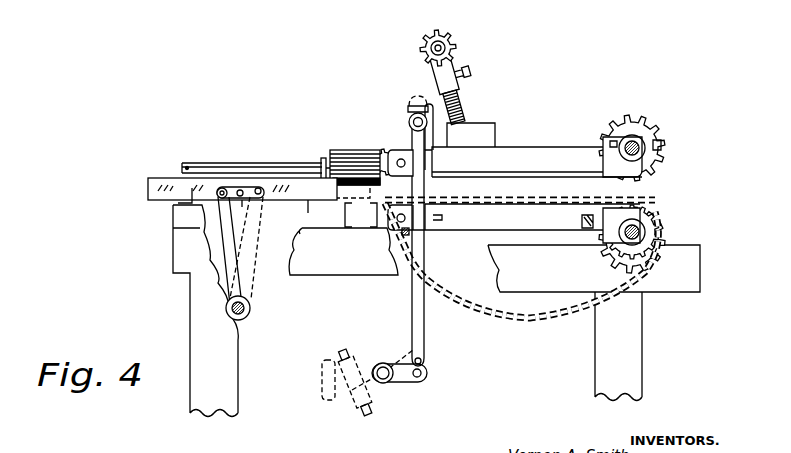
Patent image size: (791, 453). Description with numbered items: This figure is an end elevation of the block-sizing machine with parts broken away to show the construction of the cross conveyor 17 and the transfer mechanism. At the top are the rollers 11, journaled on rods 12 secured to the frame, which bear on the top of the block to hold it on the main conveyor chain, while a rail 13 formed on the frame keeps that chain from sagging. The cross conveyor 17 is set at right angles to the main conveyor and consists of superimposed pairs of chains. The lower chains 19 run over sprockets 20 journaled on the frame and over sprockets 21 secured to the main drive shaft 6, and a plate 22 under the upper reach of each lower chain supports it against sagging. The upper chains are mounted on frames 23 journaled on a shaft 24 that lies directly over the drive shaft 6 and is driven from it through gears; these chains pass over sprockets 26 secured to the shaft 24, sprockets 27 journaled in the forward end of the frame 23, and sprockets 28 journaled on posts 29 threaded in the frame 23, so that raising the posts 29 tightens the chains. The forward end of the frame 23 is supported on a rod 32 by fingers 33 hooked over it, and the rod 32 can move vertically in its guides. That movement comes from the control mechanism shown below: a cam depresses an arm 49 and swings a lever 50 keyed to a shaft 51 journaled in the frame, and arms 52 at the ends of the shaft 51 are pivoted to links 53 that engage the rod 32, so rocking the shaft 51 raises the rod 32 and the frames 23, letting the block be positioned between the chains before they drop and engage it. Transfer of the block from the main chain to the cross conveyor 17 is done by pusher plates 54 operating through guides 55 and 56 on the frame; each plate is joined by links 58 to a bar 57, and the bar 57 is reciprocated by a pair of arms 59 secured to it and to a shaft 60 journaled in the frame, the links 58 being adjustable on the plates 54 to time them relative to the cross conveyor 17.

The main drive shaft 6 is at (647, 230).
The rollers 11 is at (349, 150).
The rods 12 is at (263, 165).
The rail 13 is at (361, 215).
The cross conveyor 17 is at (547, 173).
The lower chains 19 is at (532, 322).
The sprockets 20 is at (408, 232).
The sprockets 21 is at (660, 253).
The plate 22 is at (530, 204).
The frames 23 is at (483, 135).
The shaft 24 is at (648, 148).
The sprockets 26 is at (645, 122).
The sprockets 27 is at (392, 146).
The sprockets 28 is at (457, 45).
The posts 29 is at (460, 107).
The rod 32 is at (412, 114).
The fingers 33 is at (428, 106).
The arm 49 is at (322, 377).
The lever 50 is at (351, 392).
The shaft 51 is at (386, 383).
The arms 52 is at (412, 382).
The links 53 is at (424, 333).
The pusher plates 54 is at (167, 192).
The guide 55 is at (183, 203).
The guide 56 is at (322, 160).
The bar 57 is at (222, 188).
The links 58 is at (250, 189).
The arms 59 is at (218, 273).
The shaft 60 is at (248, 314).